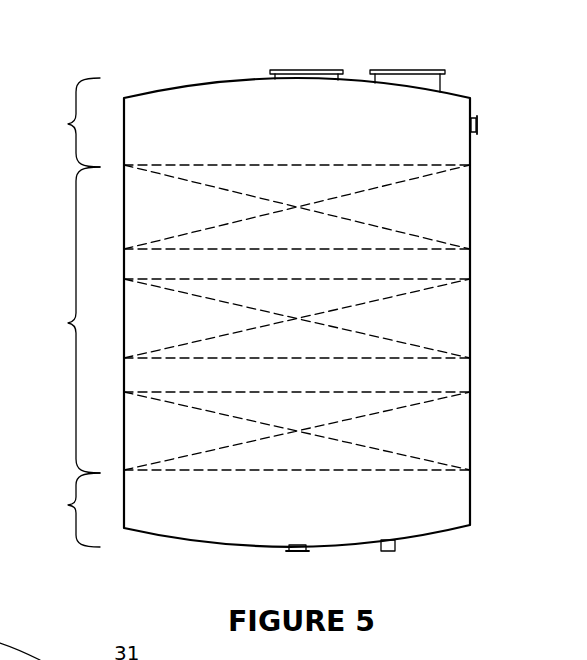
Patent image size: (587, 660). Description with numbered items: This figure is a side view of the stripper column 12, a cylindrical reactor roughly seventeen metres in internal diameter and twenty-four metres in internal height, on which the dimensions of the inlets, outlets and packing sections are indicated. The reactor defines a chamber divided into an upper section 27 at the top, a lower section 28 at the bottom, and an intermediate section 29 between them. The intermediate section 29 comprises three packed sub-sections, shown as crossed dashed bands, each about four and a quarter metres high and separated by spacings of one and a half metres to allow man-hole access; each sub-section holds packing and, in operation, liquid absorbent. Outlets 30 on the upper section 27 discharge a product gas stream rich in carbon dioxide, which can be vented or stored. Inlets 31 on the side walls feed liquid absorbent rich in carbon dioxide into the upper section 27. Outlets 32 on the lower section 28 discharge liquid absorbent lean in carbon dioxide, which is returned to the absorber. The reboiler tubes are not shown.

The stripper column 12 is at (484, 87).
The upper section 27 is at (68, 124).
The lower section 28 is at (68, 505).
The intermediate section 29 is at (68, 323).
The outlets 30 is at (312, 70).
The inlets 31 is at (478, 125).
The outlets 32 is at (293, 552).